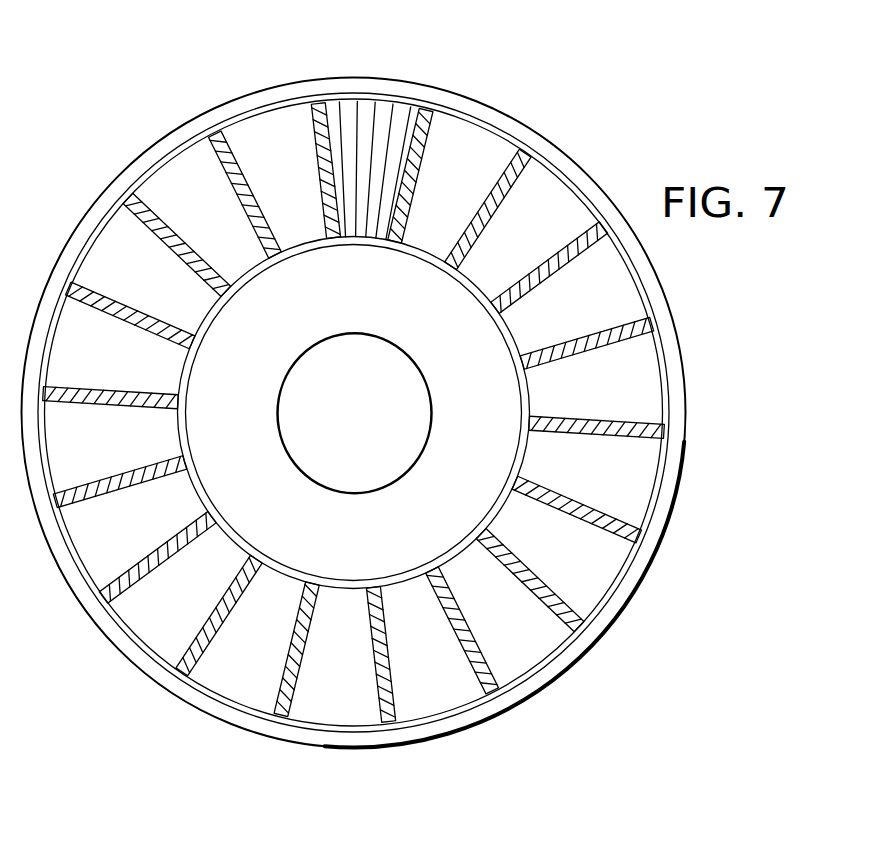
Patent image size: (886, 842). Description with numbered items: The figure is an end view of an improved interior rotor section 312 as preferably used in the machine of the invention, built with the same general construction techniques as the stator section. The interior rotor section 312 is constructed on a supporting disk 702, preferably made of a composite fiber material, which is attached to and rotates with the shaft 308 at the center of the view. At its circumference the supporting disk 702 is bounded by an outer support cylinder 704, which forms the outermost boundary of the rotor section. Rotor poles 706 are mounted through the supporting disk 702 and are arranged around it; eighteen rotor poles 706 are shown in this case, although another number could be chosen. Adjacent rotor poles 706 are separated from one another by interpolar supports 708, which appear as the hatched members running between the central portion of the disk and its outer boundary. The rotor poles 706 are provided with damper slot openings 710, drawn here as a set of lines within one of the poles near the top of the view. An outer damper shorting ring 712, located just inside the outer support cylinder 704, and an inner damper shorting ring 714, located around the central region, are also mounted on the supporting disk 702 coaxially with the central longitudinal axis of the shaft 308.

The supporting disk 702 is at (216, 417).
The outer support cylinder 704 is at (418, 74).
The rotor poles 706 is at (190, 165).
The interpolar supports 708 is at (226, 128).
The damper slot openings 710 is at (388, 93).
The outer damper shorting ring 712 is at (462, 100).
The inner damper shorting ring 714 is at (200, 296).
The shaft 308 is at (288, 471).
The interior rotor section 312 is at (632, 652).